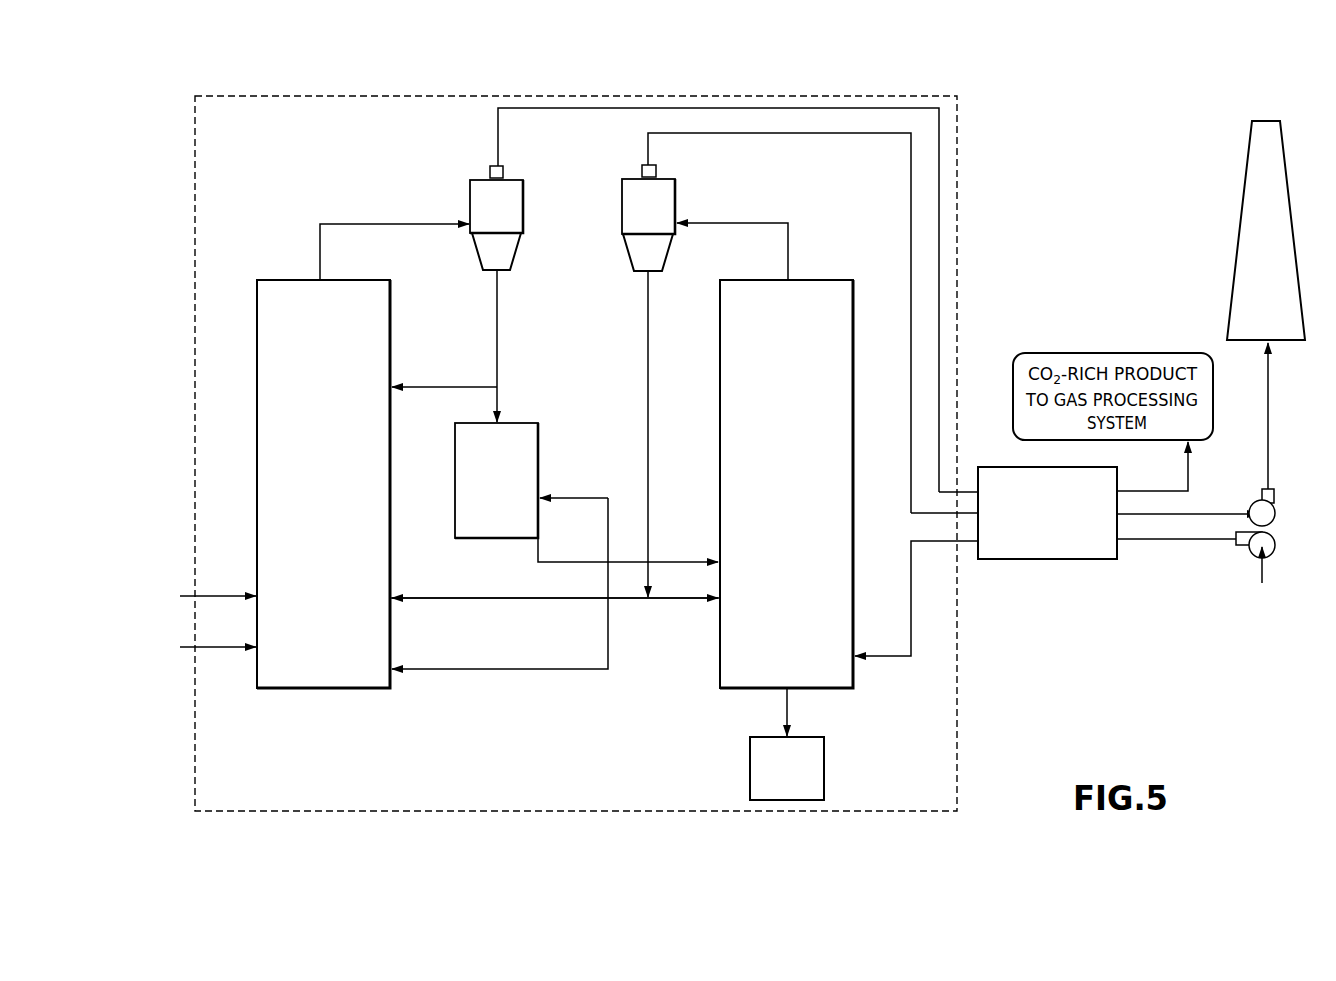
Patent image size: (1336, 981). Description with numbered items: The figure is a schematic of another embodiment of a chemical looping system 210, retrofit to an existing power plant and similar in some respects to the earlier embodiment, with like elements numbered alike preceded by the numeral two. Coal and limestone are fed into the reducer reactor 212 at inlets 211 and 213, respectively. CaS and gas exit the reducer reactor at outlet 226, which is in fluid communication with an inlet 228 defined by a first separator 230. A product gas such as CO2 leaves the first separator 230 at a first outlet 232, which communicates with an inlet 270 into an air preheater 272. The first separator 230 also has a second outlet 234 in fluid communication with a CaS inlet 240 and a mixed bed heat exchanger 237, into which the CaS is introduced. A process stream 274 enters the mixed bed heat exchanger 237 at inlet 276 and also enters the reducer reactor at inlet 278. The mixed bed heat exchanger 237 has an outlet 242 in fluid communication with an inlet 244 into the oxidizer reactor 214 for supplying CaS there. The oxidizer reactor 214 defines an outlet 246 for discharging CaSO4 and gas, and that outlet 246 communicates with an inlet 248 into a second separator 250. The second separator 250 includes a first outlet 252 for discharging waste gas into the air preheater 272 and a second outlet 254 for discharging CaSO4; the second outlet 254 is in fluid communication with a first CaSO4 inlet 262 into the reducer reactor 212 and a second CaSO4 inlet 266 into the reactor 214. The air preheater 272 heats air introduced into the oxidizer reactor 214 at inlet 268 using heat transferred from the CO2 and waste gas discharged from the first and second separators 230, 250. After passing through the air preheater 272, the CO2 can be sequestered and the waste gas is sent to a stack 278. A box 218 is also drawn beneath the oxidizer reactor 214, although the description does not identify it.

The chemical looping system 210 is at (965, 101).
The coal inlet 211 is at (225, 585).
The reducer reactor 212 is at (341, 481).
The limestone inlet 213 is at (226, 646).
The oxidizer reactor 214 is at (806, 437).
The ash removal 218 is at (805, 778).
The reducer reactor outlet 226 is at (323, 279).
The first separator inlet 228 is at (472, 225).
The first separator 230 is at (515, 207).
The first outlet of first separator 232 is at (490, 167).
The second outlet of first separator 234 is at (493, 273).
The mixed bed heat exchanger 237 is at (514, 486).
The CaS inlet 240 is at (389, 388).
The mixed bed heat exchanger outlet 242 is at (536, 546).
The oxidizer reactor inlet 244 is at (720, 561).
The oxidizer reactor outlet 246 is at (790, 279).
The second separator inlet 248 is at (673, 224).
The second separator 250 is at (666, 207).
The first outlet of second separator 252 is at (642, 165).
The second outlet of second separator 254 is at (651, 272).
The first CaSO4 inlet 262 is at (389, 598).
The second CaSO4 inlet 266 is at (720, 598).
The air inlet 268 is at (856, 661).
The air preheater inlet 270 is at (976, 490).
The air preheater 272 is at (1053, 560).
The process stream 274 is at (606, 672).
The mixed bed heat exchanger inlet 276 is at (540, 497).
The stack 278 is at (1281, 303).